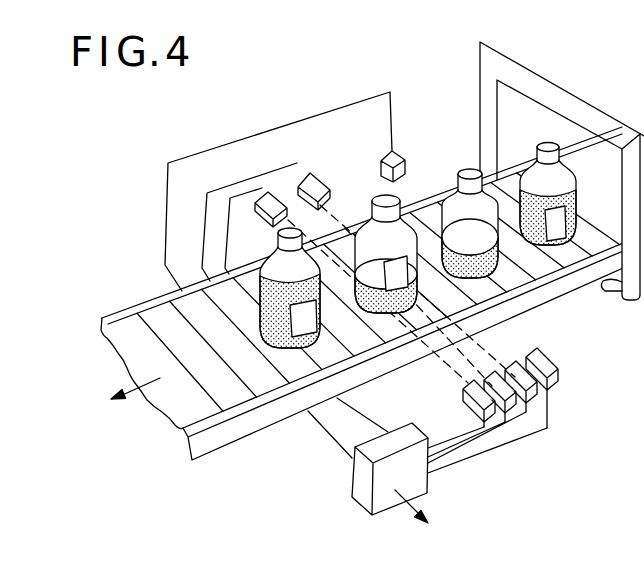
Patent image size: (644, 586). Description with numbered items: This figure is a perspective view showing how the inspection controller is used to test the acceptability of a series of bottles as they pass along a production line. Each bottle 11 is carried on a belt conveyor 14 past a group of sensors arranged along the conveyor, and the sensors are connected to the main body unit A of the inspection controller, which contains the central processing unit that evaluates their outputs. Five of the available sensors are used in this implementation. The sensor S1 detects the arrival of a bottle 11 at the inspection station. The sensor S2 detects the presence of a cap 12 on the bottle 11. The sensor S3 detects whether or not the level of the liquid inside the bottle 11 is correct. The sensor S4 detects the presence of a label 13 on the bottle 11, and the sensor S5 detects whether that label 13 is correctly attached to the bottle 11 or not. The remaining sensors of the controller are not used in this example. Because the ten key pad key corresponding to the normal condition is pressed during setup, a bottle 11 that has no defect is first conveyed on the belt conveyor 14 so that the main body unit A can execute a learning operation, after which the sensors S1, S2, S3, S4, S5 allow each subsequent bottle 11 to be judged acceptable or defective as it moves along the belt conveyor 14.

The bottle 11 is at (420, 263).
The cap 12 is at (390, 202).
The label 13 is at (393, 282).
The belt conveyor 14 is at (126, 330).
The sensor S1 is at (472, 412).
The sensor S2 is at (380, 165).
The sensor S3 is at (513, 405).
The sensor S4 is at (535, 393).
The sensor S5 is at (556, 380).
The main body unit A is at (367, 490).